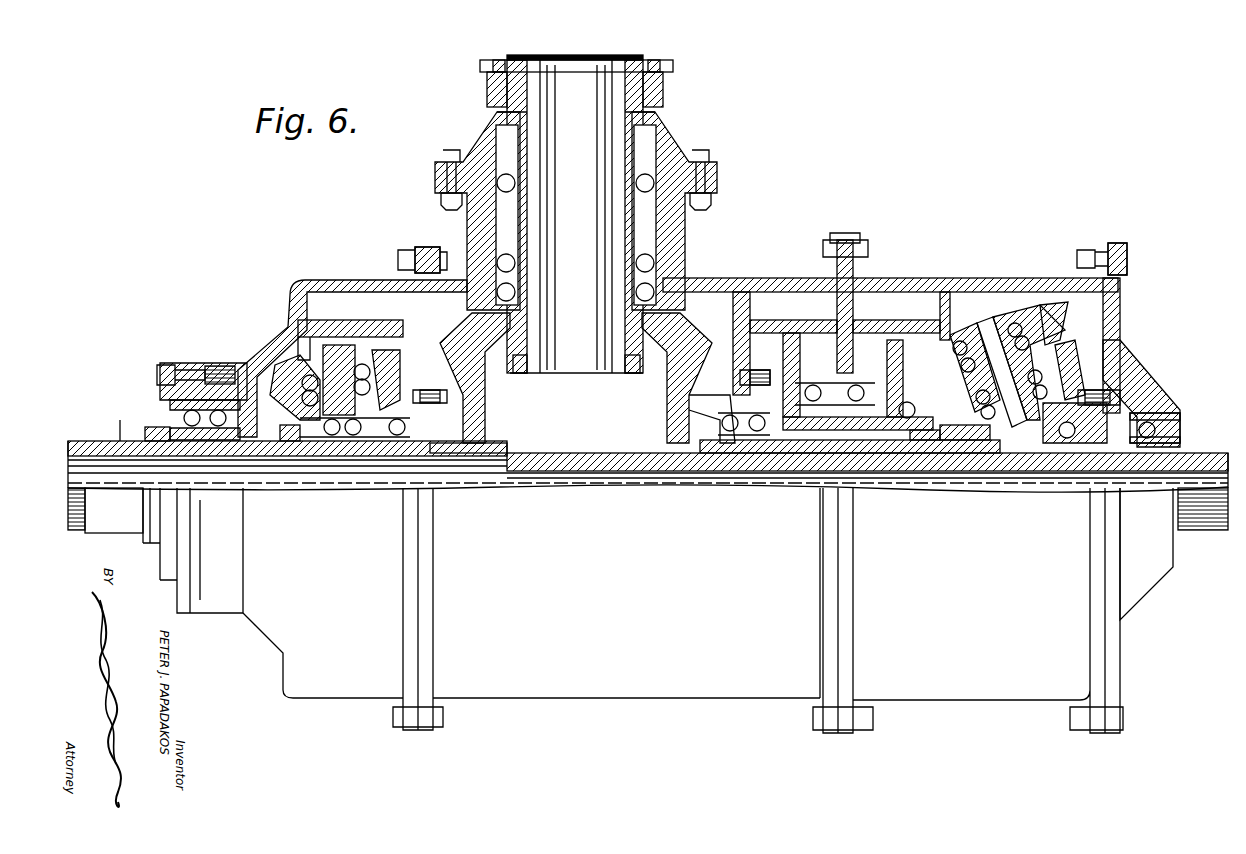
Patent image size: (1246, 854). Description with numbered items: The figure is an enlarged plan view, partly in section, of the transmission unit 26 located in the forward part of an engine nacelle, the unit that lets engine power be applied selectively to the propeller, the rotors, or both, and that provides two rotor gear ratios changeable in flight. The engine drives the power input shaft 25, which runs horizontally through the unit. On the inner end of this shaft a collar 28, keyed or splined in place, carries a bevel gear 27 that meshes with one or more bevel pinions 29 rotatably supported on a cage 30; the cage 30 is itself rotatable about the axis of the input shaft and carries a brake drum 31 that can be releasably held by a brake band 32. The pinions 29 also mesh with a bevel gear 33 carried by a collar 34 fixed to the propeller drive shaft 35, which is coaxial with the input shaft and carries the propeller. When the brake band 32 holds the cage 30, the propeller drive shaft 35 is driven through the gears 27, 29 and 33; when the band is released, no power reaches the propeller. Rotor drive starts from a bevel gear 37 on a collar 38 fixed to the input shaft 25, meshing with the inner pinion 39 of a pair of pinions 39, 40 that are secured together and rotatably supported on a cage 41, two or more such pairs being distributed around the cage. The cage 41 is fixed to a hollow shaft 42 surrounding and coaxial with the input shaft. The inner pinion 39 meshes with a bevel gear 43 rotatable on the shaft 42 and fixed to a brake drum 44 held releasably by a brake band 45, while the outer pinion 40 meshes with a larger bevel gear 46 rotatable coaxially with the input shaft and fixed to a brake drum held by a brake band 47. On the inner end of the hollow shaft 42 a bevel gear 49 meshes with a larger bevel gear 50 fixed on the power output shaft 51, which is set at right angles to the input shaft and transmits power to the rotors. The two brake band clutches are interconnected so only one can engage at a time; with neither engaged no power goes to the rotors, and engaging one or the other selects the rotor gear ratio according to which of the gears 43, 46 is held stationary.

The power input shaft 25 is at (567, 452).
The transmission unit 26 is at (660, 580).
The bevel gear 27 is at (440, 378).
The collar 28 is at (500, 445).
The bevel pinion 29 is at (262, 352).
The cage 30 is at (295, 387).
The brake drum 31 is at (305, 325).
The brake band 32 is at (350, 325).
The bevel gear 33 is at (293, 441).
The collar 34 is at (265, 441).
The propeller drive shaft 35 is at (118, 441).
The bevel gear 37 is at (1093, 370).
The collar 38 is at (1127, 410).
The inner pinion 39 is at (1060, 370).
The outer pinion 40 is at (1027, 320).
The cage 41 is at (990, 320).
The hollow shaft 42 is at (1033, 443).
The bevel gear 43 is at (953, 443).
The brake drum 44 is at (790, 350).
The brake band 45 is at (777, 320).
The larger bevel gear 46 is at (930, 443).
The brake band 47 is at (888, 320).
The bevel gear 49 is at (673, 417).
The larger bevel gear 50 is at (650, 380).
The power output shaft 51 is at (540, 232).